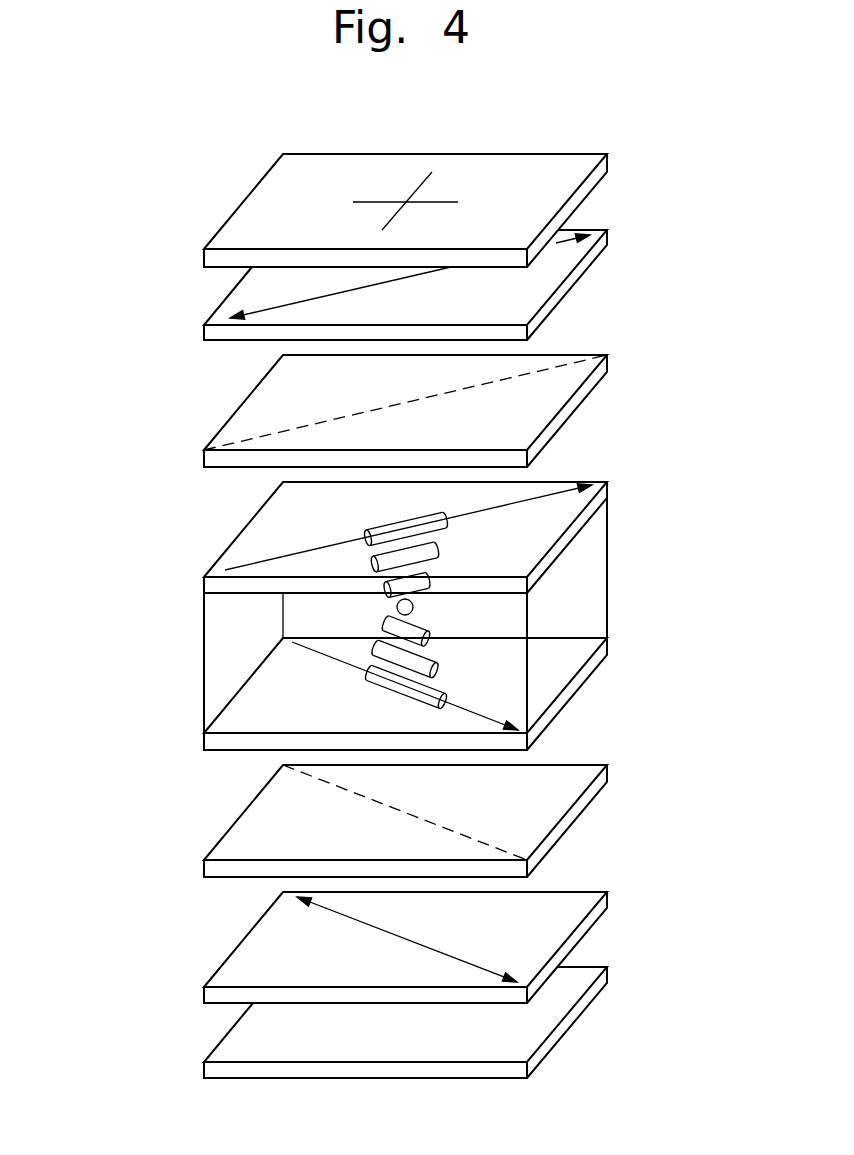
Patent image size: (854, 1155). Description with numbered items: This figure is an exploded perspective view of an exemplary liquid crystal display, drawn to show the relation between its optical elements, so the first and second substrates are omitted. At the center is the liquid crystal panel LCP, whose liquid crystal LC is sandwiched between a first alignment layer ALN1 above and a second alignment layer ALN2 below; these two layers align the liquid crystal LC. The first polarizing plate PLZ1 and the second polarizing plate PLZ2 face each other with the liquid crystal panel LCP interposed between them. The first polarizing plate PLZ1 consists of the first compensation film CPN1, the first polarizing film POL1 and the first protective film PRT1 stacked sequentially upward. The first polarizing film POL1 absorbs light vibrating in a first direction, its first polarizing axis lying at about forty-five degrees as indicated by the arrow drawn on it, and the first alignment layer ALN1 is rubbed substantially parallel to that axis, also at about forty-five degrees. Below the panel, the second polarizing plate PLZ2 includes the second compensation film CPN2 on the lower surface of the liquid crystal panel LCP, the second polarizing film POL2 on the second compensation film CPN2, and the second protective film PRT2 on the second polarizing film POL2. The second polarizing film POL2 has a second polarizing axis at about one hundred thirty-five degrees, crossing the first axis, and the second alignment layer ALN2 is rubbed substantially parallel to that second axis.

The first protective film PRT1 is at (204, 259).
The first polarizing film POL1 is at (204, 334).
The first compensation film CPN1 is at (204, 458).
The first polarizing plate PLZ1 is at (633, 460).
The first alignment layer ALN1 is at (204, 585).
The liquid crystal LC is at (205, 658).
The second alignment layer ALN2 is at (204, 742).
The liquid crystal panel LCP is at (117, 580).
The second compensation film CPN2 is at (204, 868).
The second polarizing film POL2 is at (204, 995).
The second protective film PRT2 is at (204, 1072).
The second polarizing plate PLZ2 is at (633, 752).